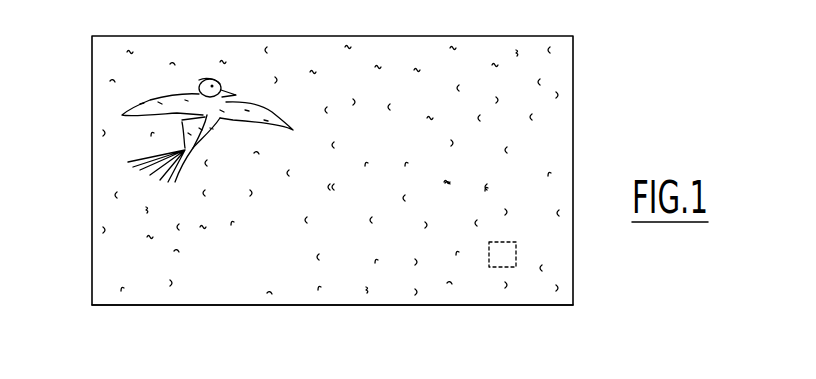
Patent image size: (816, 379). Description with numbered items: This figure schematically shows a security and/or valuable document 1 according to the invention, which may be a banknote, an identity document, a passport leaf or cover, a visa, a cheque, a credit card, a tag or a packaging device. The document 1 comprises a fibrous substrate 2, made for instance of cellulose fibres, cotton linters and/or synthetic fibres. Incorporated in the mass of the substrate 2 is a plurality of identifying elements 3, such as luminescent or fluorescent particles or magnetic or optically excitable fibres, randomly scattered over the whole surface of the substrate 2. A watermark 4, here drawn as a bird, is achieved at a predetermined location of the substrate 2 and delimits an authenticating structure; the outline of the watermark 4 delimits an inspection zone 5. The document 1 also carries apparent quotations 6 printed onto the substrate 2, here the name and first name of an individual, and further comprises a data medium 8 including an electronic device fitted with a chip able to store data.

The security and/or valuable document 1 is at (579, 91).
The fibrous substrate 2 is at (473, 283).
The identifying elements 3 is at (224, 89).
The watermark 4 is at (197, 82).
The inspection zone 5 is at (182, 121).
The apparent quotations 6 is at (135, 277).
The data medium 8 is at (503, 260).